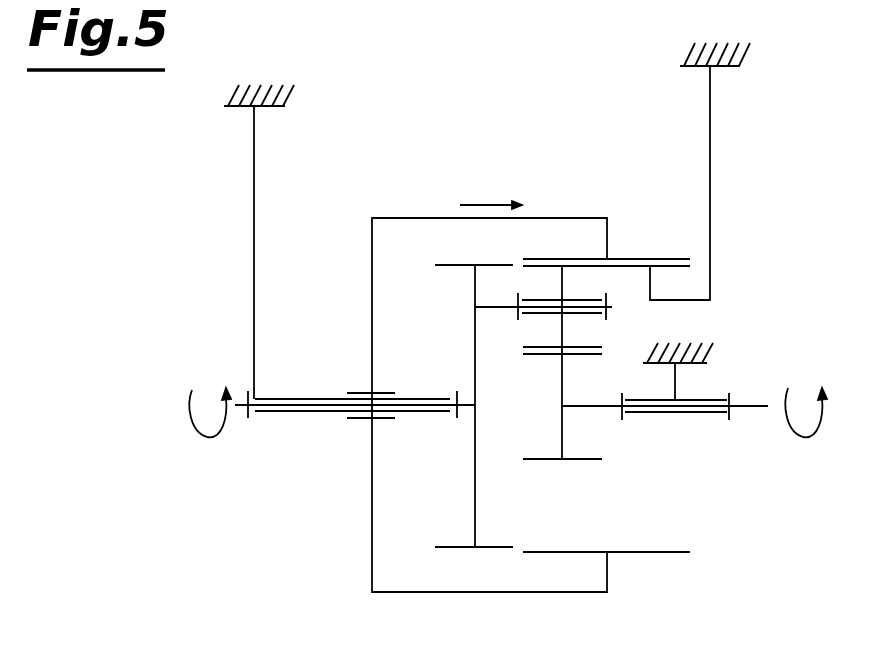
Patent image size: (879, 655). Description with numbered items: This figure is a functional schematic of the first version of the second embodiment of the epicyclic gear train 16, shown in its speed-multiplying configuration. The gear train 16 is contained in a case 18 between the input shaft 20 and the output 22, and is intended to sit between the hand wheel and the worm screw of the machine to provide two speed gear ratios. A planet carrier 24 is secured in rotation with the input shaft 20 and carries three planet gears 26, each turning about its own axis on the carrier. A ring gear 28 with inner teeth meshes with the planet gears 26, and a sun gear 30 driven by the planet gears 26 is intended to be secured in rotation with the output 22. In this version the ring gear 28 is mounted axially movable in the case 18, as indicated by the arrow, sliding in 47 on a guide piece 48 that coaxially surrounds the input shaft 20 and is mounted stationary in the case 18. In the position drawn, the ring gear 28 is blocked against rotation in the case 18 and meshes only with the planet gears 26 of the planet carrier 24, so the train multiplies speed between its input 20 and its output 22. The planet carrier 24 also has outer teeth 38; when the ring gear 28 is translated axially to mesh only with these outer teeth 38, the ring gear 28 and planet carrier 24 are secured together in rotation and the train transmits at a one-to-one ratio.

The epicyclic gear train 16 is at (459, 116).
The case 18 is at (254, 250).
The input shaft 20 is at (242, 400).
The output 22 is at (751, 404).
The planet carrier 24 is at (475, 328).
The planet gears 26 is at (562, 331).
The ring gear 28 is at (648, 258).
The sun gear 30 is at (585, 461).
The outer teeth of the planet carrier 38 is at (450, 546).
The sliding 47 is at (355, 392).
The guide piece 48 is at (318, 412).